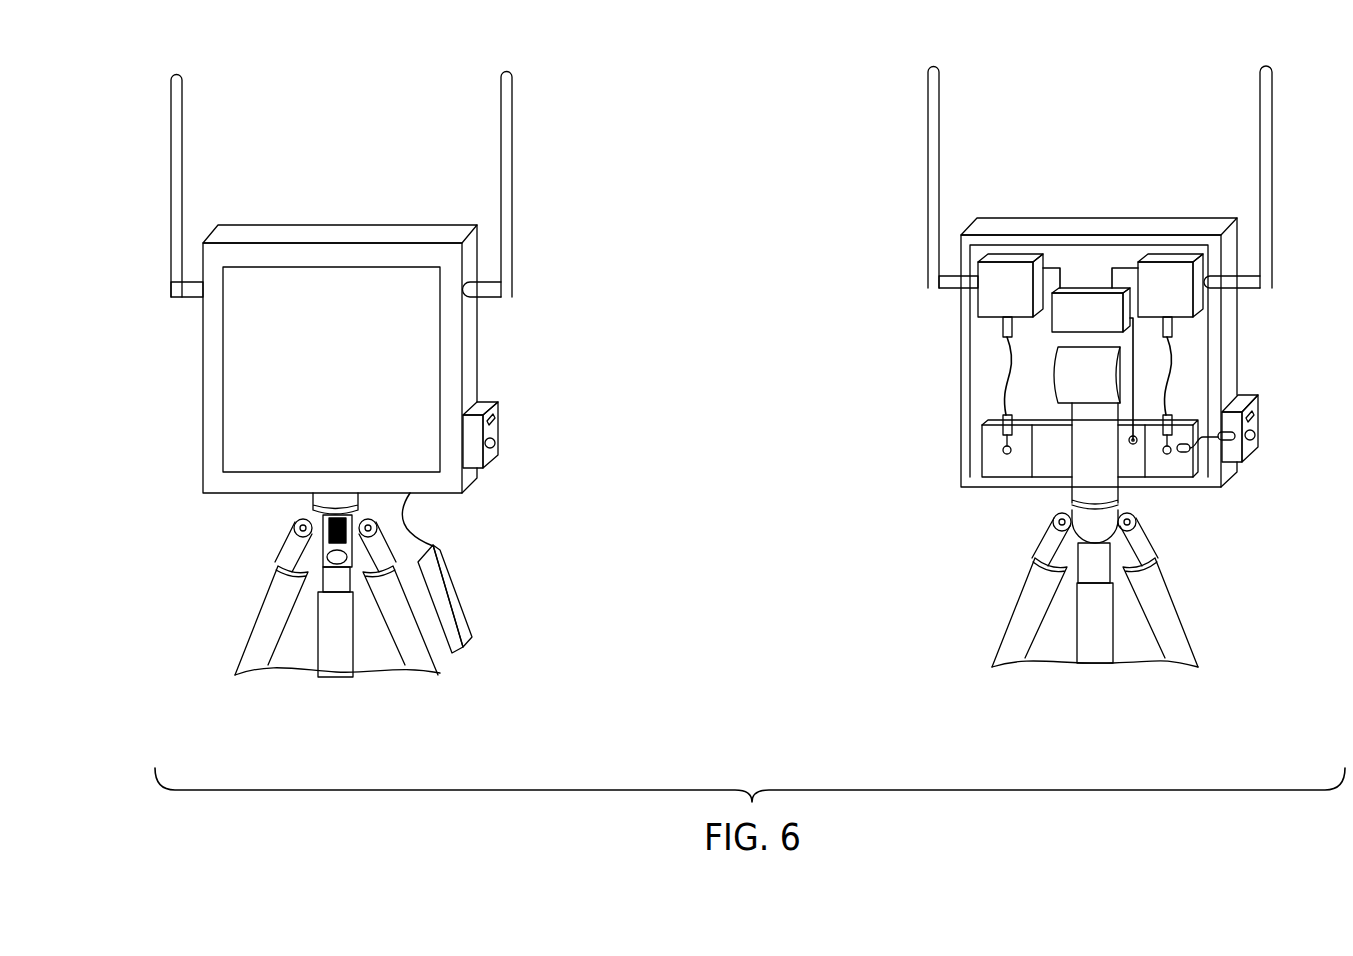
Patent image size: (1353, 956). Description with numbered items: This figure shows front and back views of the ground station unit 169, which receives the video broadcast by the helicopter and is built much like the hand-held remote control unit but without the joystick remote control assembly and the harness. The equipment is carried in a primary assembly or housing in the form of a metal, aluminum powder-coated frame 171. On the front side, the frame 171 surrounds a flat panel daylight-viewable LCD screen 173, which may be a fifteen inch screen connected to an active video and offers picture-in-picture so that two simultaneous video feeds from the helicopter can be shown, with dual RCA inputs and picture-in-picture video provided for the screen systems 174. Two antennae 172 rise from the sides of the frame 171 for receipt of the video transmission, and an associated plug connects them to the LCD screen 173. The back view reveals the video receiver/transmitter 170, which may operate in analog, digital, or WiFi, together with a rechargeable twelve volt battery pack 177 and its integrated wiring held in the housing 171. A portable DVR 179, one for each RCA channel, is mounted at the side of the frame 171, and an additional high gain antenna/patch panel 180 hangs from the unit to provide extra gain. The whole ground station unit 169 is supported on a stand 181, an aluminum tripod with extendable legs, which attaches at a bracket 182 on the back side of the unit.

The ground station unit 169 is at (550, 100).
The video receiver/transmitter 170 is at (1013, 268).
The frame 171 is at (470, 392).
The antennae 172 is at (512, 182).
The LCD screen 173 is at (432, 353).
The screen systems 174 is at (1008, 472).
The battery pack 177 is at (1095, 306).
The portable DVR 179 is at (502, 430).
The high gain antenna/patch panel 180 is at (460, 592).
The stand 181 is at (262, 607).
The mounting bracket 182 is at (1078, 361).